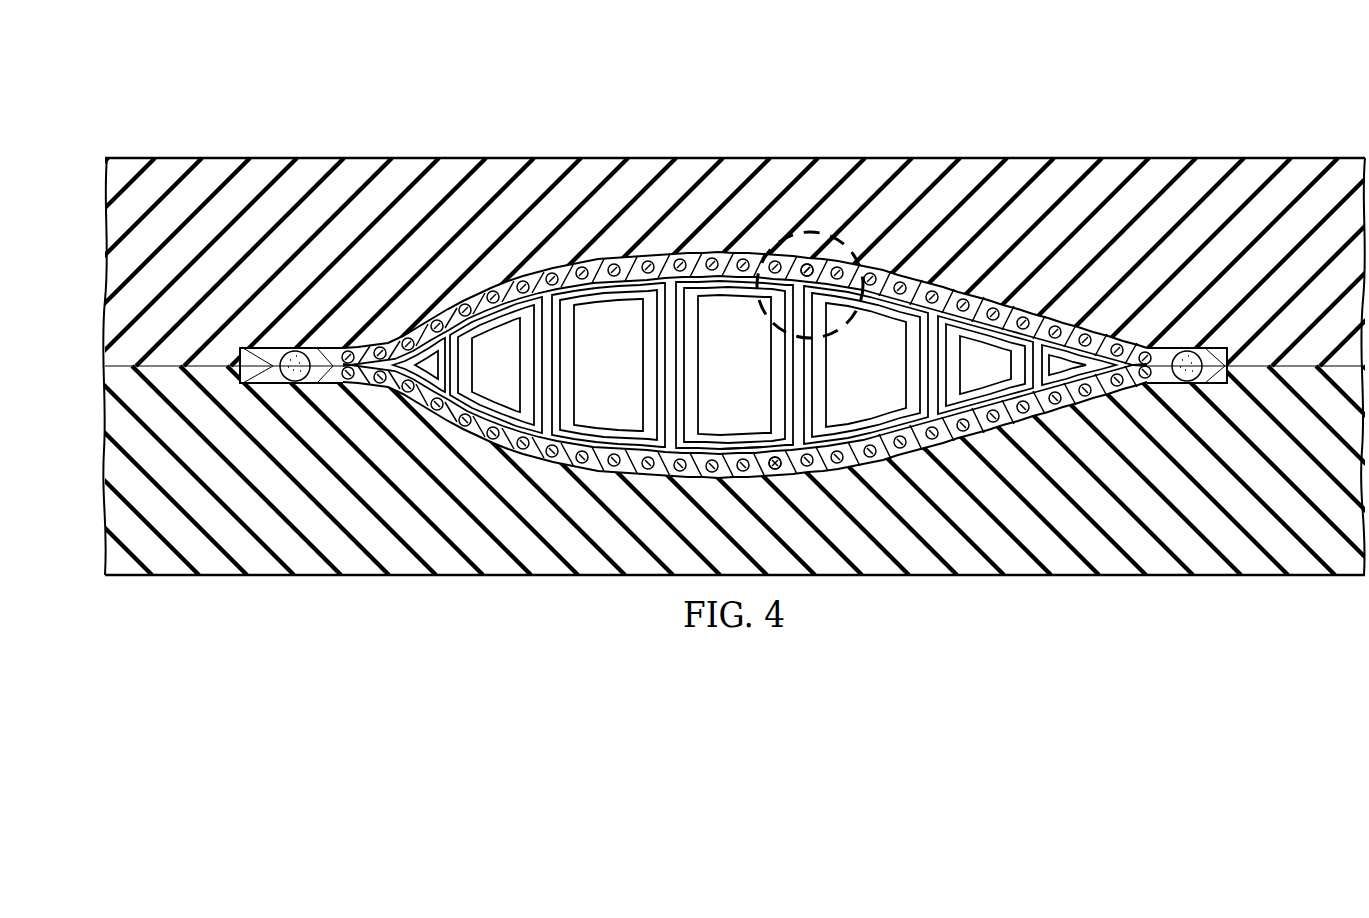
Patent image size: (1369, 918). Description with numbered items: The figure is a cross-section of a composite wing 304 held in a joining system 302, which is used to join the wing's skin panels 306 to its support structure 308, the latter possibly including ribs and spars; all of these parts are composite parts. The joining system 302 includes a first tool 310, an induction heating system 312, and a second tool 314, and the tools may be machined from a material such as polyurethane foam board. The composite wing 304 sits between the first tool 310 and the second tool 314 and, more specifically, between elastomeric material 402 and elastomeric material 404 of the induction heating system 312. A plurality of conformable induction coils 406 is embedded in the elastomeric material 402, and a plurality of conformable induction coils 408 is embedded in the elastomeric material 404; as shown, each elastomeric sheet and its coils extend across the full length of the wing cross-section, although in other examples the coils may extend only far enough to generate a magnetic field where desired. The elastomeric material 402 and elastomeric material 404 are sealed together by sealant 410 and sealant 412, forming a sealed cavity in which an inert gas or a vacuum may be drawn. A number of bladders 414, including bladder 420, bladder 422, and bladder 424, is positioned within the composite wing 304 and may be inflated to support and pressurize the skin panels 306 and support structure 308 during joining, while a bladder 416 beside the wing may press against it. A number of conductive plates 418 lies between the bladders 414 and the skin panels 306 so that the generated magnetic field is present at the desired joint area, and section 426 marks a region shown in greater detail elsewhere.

The joining system 302 is at (303, 89).
The composite wing 304 is at (657, 255).
The skin panels 306 is at (902, 275).
The support structure 308 is at (925, 447).
The first tool 310 is at (227, 576).
The induction heating system 312 is at (868, 463).
The second tool 314 is at (227, 158).
The elastomeric material 402 is at (603, 473).
The elastomeric material 404 is at (600, 259).
The plurality of conformable induction coils 406 is at (781, 476).
The plurality of conformable induction coils 408 is at (800, 260).
The sealant 410 is at (290, 351).
The sealant 412 is at (1190, 383).
The number of bladders 414 is at (499, 378).
The bladder 416 is at (427, 384).
The number of conductive plates 418 is at (733, 457).
The bladder 420 is at (632, 380).
The bladder 422 is at (755, 380).
The bladder 424 is at (888, 380).
The section 426 is at (822, 238).